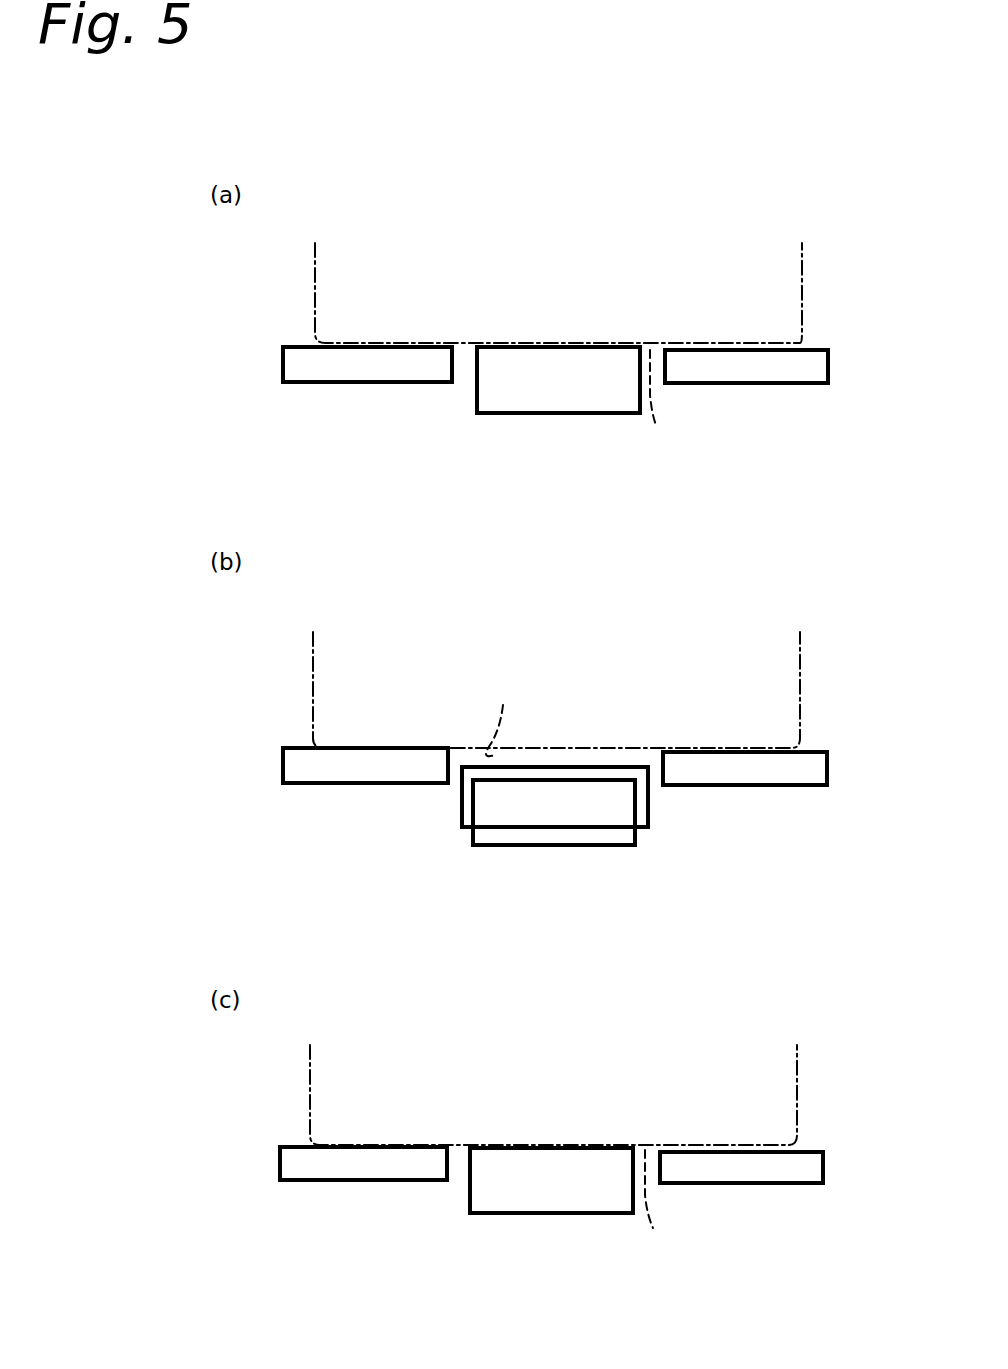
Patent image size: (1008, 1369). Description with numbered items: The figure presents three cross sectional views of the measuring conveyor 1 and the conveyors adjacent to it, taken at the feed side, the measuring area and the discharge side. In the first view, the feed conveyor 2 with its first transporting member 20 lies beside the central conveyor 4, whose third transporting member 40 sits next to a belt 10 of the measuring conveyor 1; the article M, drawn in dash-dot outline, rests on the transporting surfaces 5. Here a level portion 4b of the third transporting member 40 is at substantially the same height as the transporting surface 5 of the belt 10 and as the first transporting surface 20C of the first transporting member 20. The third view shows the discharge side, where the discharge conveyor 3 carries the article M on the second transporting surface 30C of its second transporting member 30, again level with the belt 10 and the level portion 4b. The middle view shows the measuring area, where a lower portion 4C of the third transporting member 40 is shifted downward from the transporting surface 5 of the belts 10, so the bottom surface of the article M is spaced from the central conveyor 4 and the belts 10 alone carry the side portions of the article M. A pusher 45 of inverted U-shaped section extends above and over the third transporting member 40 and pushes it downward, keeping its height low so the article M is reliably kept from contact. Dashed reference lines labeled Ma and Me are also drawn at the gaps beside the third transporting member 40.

The measuring conveyor 1 is at (758, 446).
The feed conveyor 2 is at (363, 440).
The discharge conveyor 3 is at (778, 1225).
The central conveyor 4 is at (512, 442).
The transporting surface 5 is at (816, 349).
The belt 10 is at (742, 372).
The first transporting member 20 is at (370, 386).
The first transporting surface 20C is at (300, 346).
The second transporting member 30 is at (737, 1175).
The second transporting surface 30C is at (808, 1152).
The third transporting member 40 is at (563, 414).
The pusher 45 is at (642, 815).
The level portion 4b is at (562, 346).
The lower portion 4C is at (556, 768).
The article M is at (806, 286).
The reference line Ma is at (664, 806).
The reference line Me is at (504, 717).